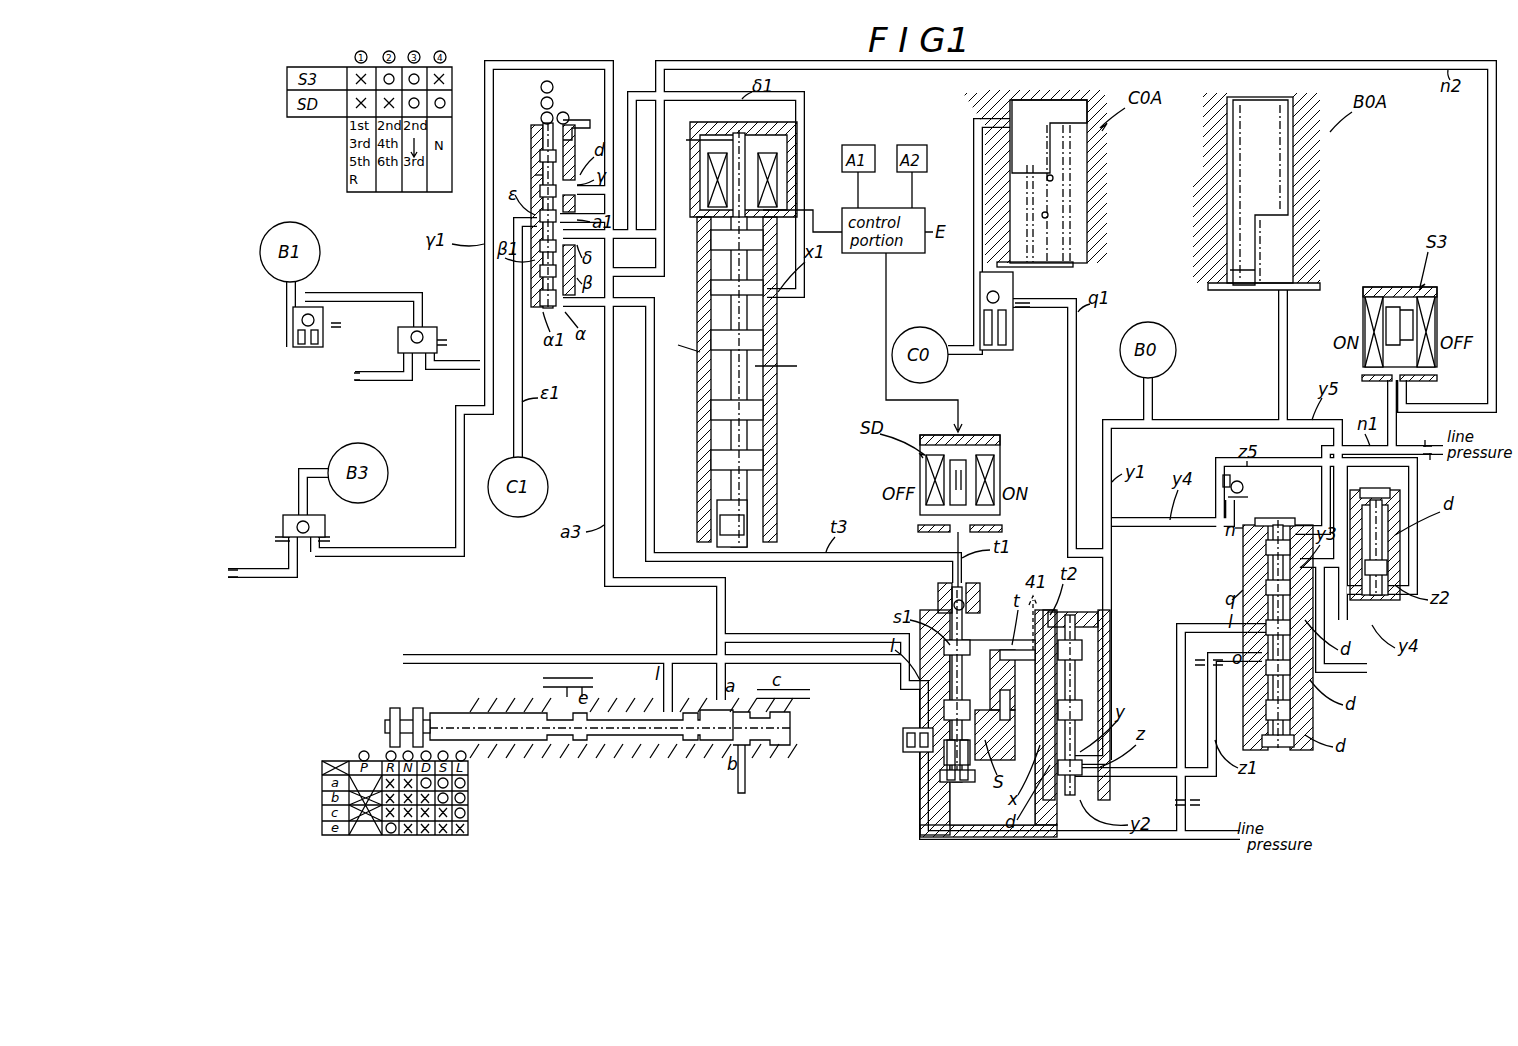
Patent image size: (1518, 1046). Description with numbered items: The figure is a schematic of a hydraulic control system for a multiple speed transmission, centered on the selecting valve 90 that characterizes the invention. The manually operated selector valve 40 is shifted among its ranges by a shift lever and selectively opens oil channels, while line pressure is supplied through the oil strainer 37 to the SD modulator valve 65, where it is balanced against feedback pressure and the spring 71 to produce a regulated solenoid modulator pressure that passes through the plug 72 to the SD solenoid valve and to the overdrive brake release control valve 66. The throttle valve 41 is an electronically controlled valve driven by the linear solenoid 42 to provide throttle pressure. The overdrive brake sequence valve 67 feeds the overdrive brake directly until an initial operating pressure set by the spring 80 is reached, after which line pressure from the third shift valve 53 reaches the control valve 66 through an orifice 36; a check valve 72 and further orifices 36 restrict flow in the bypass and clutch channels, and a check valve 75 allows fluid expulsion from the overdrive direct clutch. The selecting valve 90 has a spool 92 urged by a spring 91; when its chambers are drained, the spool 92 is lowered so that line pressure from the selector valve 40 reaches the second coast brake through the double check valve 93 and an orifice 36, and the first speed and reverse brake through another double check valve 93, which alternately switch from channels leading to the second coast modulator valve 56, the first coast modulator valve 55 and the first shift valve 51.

The orifice 36 is at (333, 322).
The oil strainer 37 is at (905, 730).
The manually operated selector valve 40 is at (386, 702).
The throttle valve 41 is at (799, 326).
The linear solenoid 42 is at (783, 182).
The first shift valve 51 is at (1372, 669).
The third shift valve 53 is at (1278, 516).
The first coast modulator valve 55 is at (246, 584).
The second coast modulator valve 56 is at (354, 377).
The SD modulator valve 65 is at (905, 607).
The B0 release control valve 66 is at (1103, 608).
The B0 sequence valve 67 is at (1408, 531).
The spring 71 is at (940, 773).
The plug 72 is at (948, 605).
The check valve 75 is at (295, 322).
The spring 80 is at (1385, 540).
The selecting valve 90 is at (574, 120).
The spring 91 is at (535, 133).
The spool 92 is at (535, 183).
The double check valve 93 is at (398, 340).